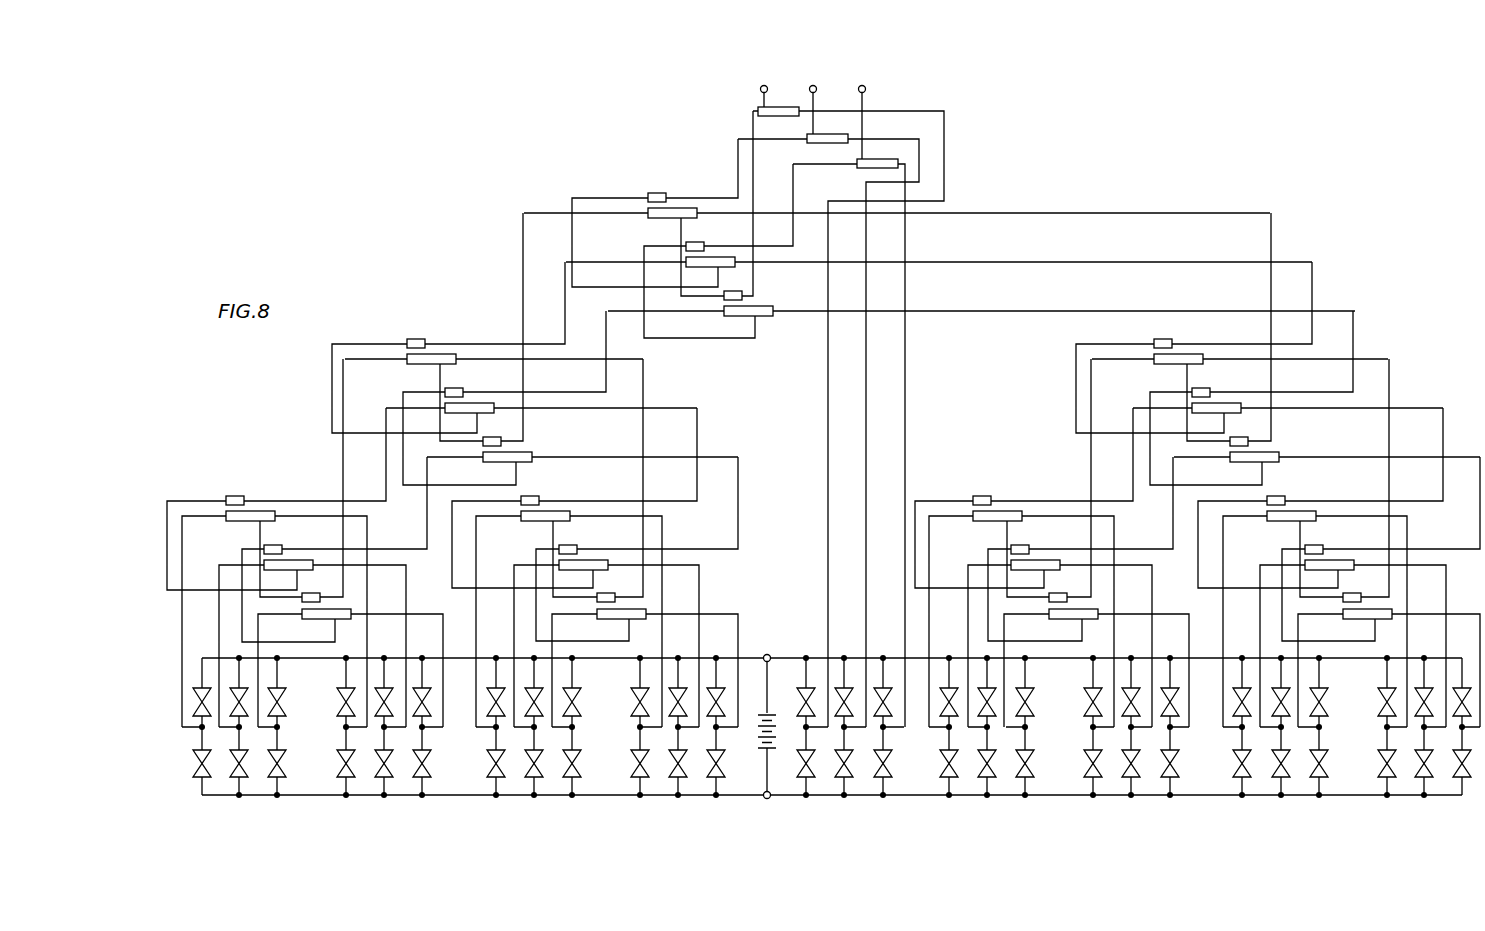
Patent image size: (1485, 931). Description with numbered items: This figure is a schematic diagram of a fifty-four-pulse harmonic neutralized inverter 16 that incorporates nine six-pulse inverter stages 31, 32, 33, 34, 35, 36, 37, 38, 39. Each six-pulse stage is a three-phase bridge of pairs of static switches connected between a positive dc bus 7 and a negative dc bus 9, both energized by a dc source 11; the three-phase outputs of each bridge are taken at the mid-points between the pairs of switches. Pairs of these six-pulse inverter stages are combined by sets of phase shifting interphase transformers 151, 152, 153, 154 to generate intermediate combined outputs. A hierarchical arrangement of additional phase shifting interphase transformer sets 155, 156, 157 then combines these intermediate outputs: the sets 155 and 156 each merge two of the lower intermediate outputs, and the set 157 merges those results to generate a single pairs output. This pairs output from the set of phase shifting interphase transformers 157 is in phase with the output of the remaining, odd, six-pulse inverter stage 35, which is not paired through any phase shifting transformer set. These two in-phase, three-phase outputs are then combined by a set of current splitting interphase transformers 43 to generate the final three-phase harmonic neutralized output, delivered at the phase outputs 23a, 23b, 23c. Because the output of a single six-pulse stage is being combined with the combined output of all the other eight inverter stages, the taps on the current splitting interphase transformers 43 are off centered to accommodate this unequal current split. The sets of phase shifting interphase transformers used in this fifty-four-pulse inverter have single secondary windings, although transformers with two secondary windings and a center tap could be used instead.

The 54 pulse harmonic neutralized inverter 16 is at (1121, 139).
The six-pulse inverter stage 31 is at (249, 810).
The six-pulse inverter stage 32 is at (374, 810).
The six-pulse inverter stage 33 is at (524, 810).
The six-pulse inverter stage 34 is at (681, 810).
The six-pulse inverter stage 35 is at (839, 810).
The six-pulse inverter stage 36 is at (989, 810).
The six-pulse inverter stage 37 is at (1139, 810).
The six-pulse inverter stage 38 is at (1261, 810).
The six-pulse inverter stage 39 is at (1412, 810).
The positive dc bus 7 is at (754, 656).
The negative dc bus 9 is at (757, 798).
The dc source 11 is at (779, 716).
The phase shifting interphase transformer set 151 is at (216, 490).
The phase shifting interphase transformer set 152 is at (558, 488).
The phase shifting interphase transformer set 153 is at (958, 488).
The phase shifting interphase transformer set 154 is at (1321, 490).
The phase shifting interphase transformer set 155 is at (396, 336).
The phase shifting interphase transformer set 156 is at (1122, 345).
The phase shifting interphase transformer set 157 is at (648, 178).
The phase output 23a is at (763, 86).
The phase output 23b is at (812, 86).
The phase output 23c is at (864, 86).
The current splitting interphase transformers 43 is at (932, 106).